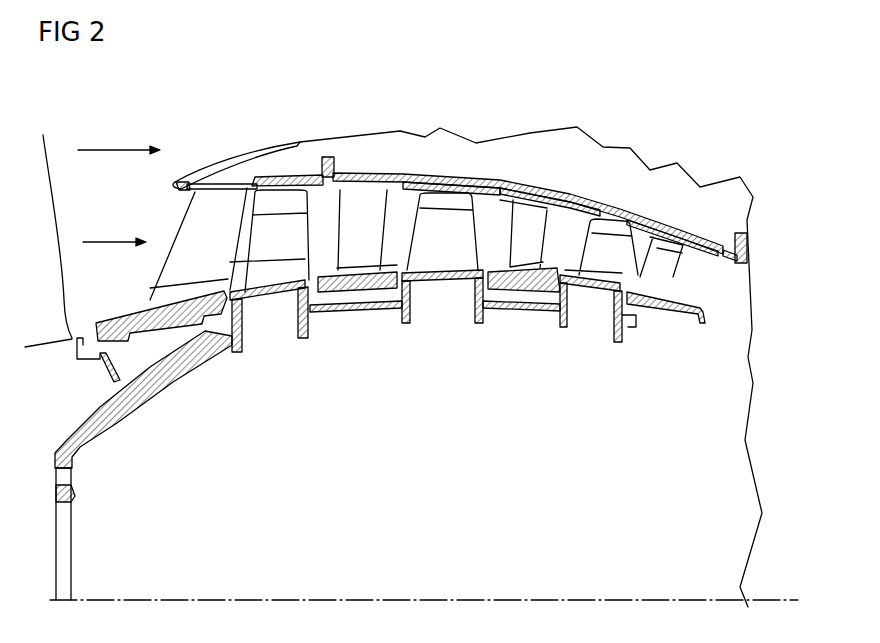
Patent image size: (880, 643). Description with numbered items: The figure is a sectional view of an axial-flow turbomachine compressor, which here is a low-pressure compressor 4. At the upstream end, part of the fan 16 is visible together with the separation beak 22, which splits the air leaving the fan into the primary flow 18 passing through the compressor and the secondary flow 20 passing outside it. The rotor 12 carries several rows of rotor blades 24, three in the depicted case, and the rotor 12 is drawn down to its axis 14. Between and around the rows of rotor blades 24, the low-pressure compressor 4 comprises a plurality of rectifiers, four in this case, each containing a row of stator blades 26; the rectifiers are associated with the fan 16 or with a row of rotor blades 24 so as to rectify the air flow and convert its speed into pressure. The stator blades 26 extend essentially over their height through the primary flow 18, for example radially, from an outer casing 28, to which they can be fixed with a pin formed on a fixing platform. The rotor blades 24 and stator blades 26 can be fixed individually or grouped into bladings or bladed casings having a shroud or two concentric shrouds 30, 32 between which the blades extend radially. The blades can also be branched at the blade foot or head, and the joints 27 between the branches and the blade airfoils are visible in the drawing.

The low-pressure compressor 4 is at (669, 119).
The rotor 12 is at (72, 463).
The axis of rotation 14 is at (503, 598).
The fan 16 is at (29, 252).
The primary flow 18 is at (114, 229).
The secondary flow 20 is at (119, 137).
The separation beak 22 is at (172, 187).
The rotor blades 24 is at (266, 248).
The stator blades 26 is at (183, 257).
The joints 27 is at (580, 272).
The outer casing 28 is at (498, 191).
The outer shroud 30 is at (370, 185).
The inner shroud 32 is at (107, 322).